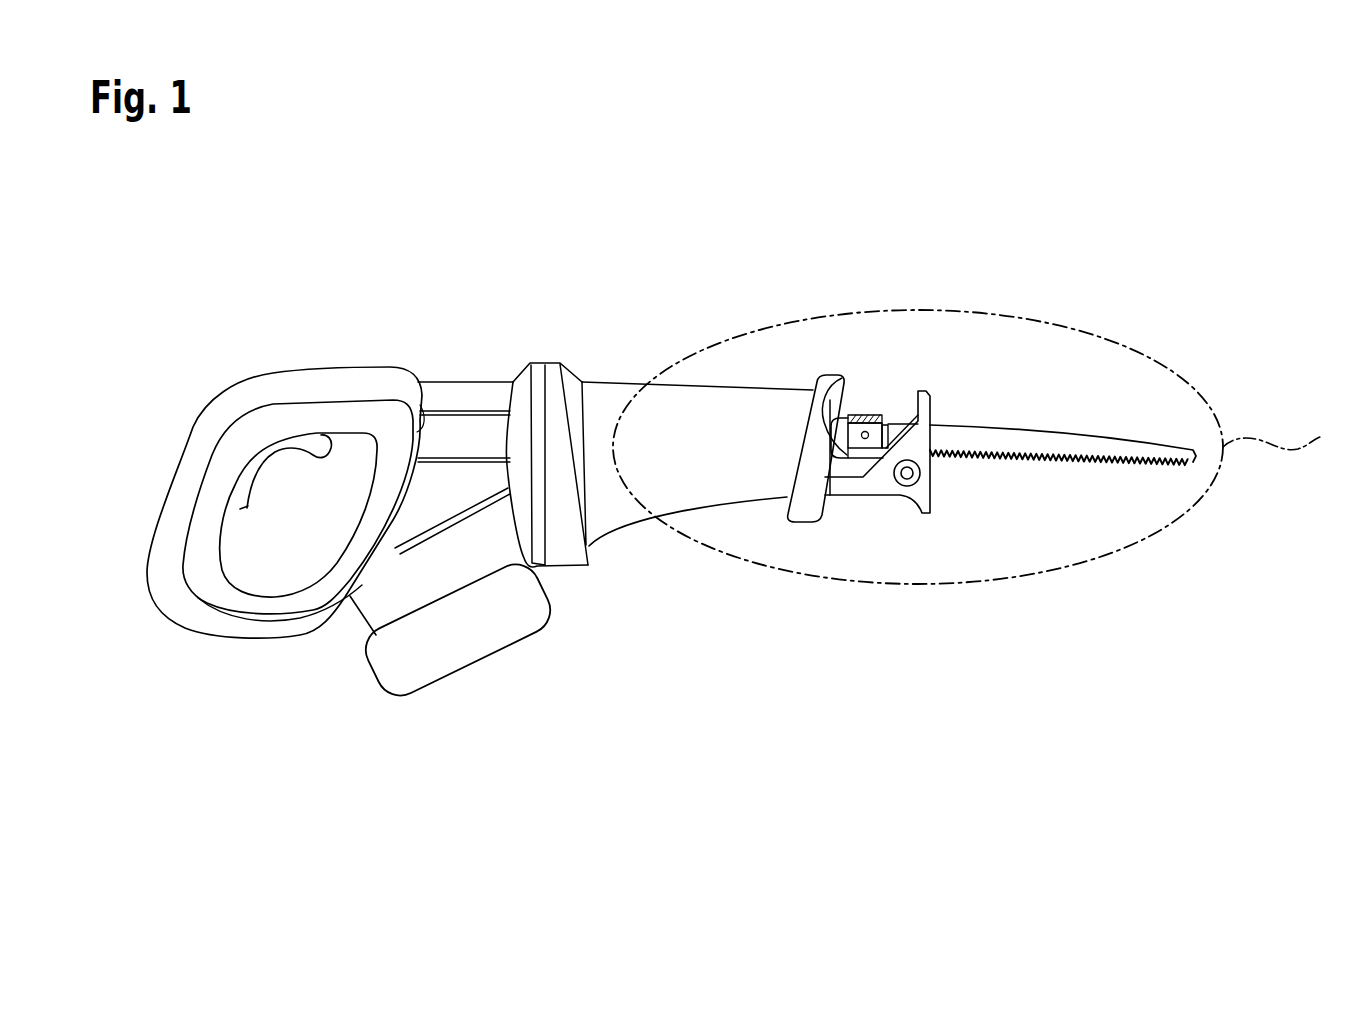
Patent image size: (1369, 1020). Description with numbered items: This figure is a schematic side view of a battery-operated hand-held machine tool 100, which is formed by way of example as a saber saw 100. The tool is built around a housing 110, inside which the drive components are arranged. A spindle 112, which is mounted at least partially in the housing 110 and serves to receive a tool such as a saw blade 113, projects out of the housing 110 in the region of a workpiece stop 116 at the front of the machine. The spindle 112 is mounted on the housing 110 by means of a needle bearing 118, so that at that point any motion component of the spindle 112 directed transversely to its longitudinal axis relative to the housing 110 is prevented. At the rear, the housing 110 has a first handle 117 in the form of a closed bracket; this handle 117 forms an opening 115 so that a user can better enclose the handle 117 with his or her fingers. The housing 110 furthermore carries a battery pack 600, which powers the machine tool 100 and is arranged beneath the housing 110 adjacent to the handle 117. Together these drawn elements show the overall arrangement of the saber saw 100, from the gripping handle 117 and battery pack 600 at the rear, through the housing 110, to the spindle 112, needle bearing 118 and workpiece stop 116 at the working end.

The hand-held machine tool 100 is at (1190, 250).
The housing 110 is at (468, 400).
The spindle 112 is at (838, 378).
The saw blade 113 is at (1020, 440).
The opening 115 is at (322, 447).
The workpiece stop 116 is at (883, 480).
The first handle 117 is at (188, 468).
The needle bearing 118 is at (873, 415).
The battery pack 600 is at (453, 657).